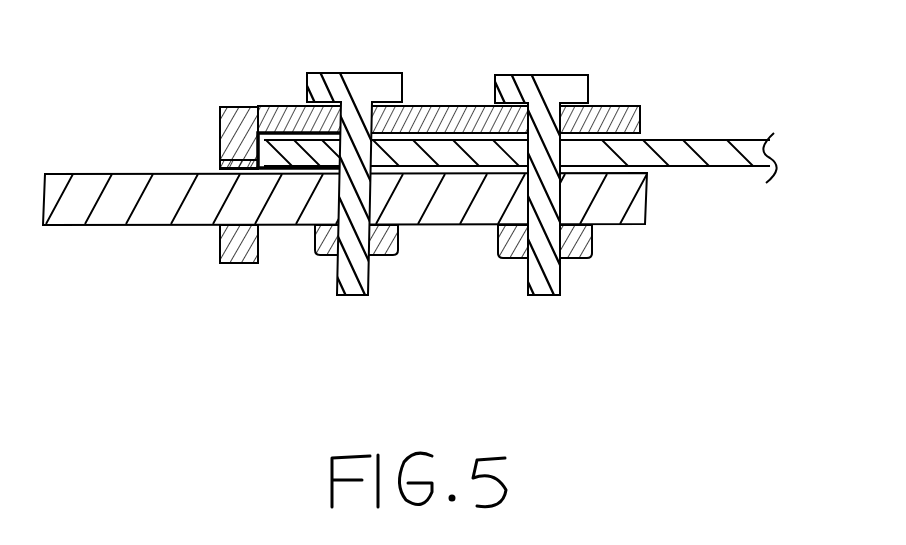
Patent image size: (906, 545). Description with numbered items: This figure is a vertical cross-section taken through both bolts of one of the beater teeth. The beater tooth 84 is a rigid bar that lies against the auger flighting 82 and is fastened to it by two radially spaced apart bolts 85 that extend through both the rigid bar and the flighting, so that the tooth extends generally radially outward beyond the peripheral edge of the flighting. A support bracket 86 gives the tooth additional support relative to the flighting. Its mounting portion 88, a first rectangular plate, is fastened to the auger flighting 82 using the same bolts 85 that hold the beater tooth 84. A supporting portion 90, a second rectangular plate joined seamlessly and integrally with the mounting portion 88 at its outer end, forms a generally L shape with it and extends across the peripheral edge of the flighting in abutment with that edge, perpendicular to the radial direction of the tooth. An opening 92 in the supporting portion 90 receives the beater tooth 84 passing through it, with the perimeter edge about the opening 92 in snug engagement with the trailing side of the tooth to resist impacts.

The auger flighting 82 is at (708, 152).
The beater tooth 84 is at (118, 212).
The bolts 85 is at (352, 72).
The support bracket 86 is at (206, 117).
The mounting portion 88 is at (432, 106).
The supporting portion 90 is at (220, 258).
The opening 92 is at (220, 166).